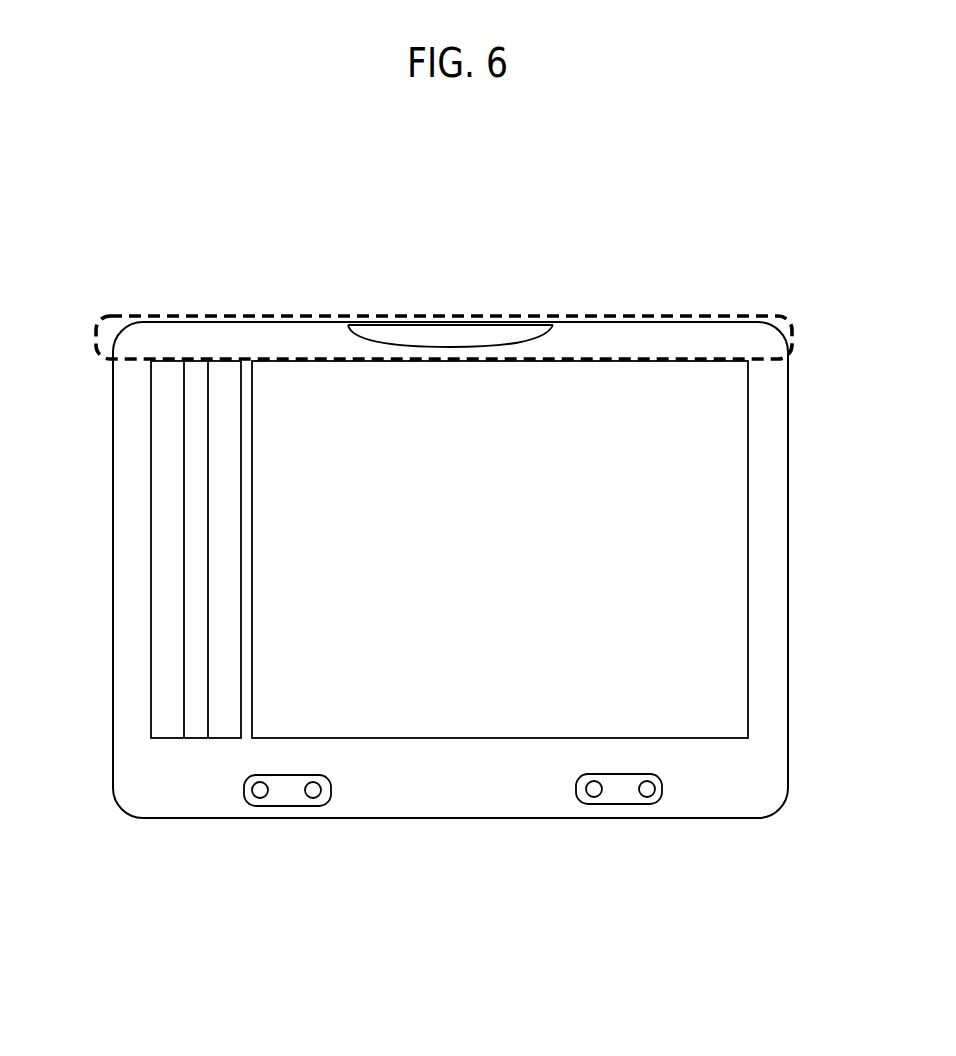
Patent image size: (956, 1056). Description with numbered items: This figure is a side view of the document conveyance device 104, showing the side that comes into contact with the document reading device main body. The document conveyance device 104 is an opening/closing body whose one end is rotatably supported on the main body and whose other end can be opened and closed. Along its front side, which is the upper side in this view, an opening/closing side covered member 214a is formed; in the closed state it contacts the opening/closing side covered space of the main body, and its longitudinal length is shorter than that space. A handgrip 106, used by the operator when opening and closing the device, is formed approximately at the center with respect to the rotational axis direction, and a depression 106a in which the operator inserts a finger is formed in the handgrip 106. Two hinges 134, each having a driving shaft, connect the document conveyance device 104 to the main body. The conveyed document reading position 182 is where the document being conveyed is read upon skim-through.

The document conveyance device 104 is at (139, 280).
The opening/closing side covered member 214a is at (700, 314).
The conveyed document reading position 182 is at (163, 403).
The depression 106a is at (455, 333).
The handgrip 106 is at (530, 338).
The hinges 134 is at (618, 797).